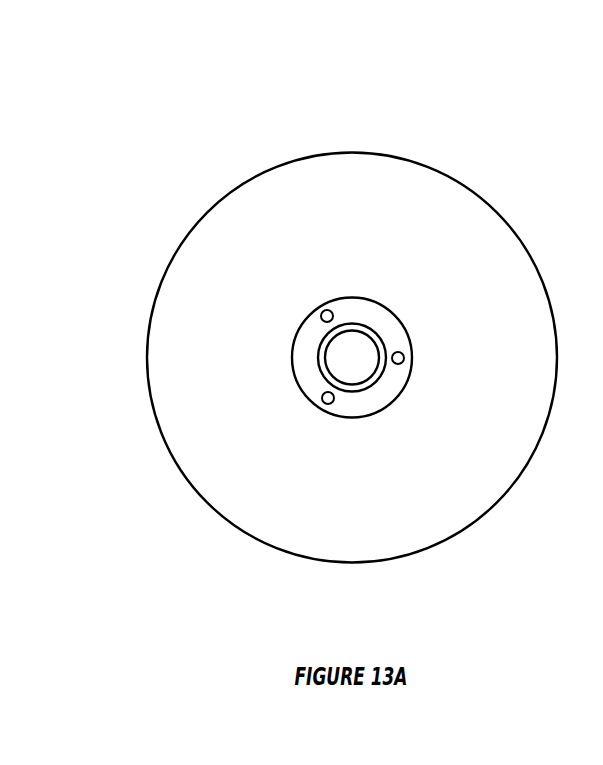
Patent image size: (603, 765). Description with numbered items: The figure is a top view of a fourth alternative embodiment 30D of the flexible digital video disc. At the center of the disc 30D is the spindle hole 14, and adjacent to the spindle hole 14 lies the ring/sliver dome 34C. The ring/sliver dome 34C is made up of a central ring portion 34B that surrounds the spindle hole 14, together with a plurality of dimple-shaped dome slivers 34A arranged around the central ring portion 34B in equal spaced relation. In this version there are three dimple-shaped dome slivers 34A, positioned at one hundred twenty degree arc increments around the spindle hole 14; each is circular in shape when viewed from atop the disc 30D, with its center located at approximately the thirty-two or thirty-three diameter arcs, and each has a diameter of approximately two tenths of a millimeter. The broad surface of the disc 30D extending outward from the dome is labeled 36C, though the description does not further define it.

The fourth alternative embodiment of the flexible digital video disc 30D is at (188, 230).
The disc face 36C is at (260, 470).
The ring/sliver dome 34C is at (392, 284).
The spindle hole 14 is at (352, 358).
The central ring portion 34B is at (318, 355).
The dimple-shaped dome slivers 34A is at (349, 314).